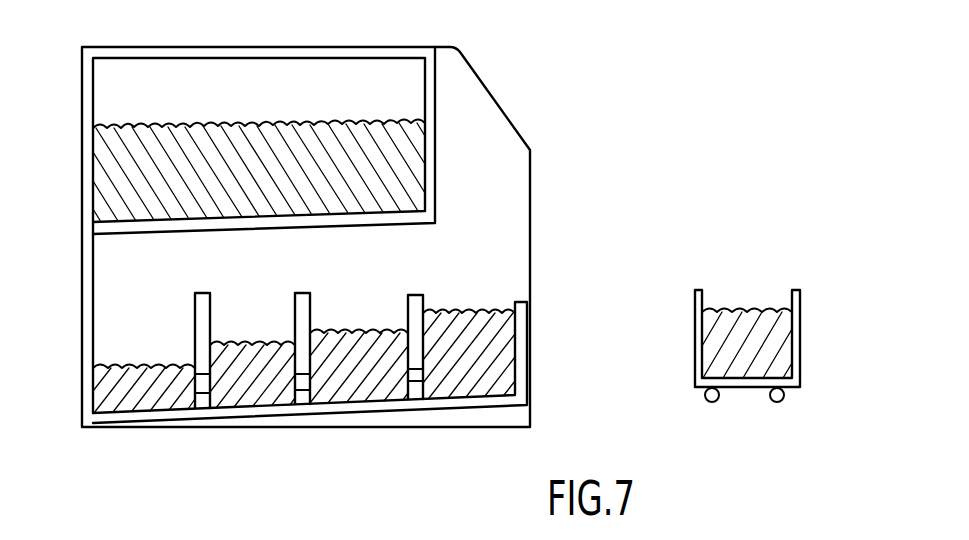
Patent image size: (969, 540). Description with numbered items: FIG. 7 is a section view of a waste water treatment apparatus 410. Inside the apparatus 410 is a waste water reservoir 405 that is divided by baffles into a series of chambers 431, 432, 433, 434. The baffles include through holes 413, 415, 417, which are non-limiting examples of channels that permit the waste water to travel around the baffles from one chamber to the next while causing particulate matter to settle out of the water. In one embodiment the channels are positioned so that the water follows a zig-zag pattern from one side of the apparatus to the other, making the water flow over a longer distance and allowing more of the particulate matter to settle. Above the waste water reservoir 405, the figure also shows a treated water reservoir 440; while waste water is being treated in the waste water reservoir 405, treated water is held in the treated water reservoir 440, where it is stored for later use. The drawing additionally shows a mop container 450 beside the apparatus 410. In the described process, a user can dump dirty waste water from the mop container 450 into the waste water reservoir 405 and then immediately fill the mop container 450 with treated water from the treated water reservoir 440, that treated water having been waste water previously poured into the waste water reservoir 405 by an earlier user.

The apparatus 410 is at (598, 128).
The treated water reservoir 440 is at (122, 170).
The waste water reservoir 405 is at (363, 317).
The through hole 415 is at (305, 378).
The through hole 413 is at (417, 381).
The through hole 417 is at (206, 383).
The chamber 434 is at (148, 392).
The chamber 433 is at (252, 383).
The chamber 432 is at (367, 377).
The chamber 431 is at (500, 342).
The mop container 450 is at (802, 305).